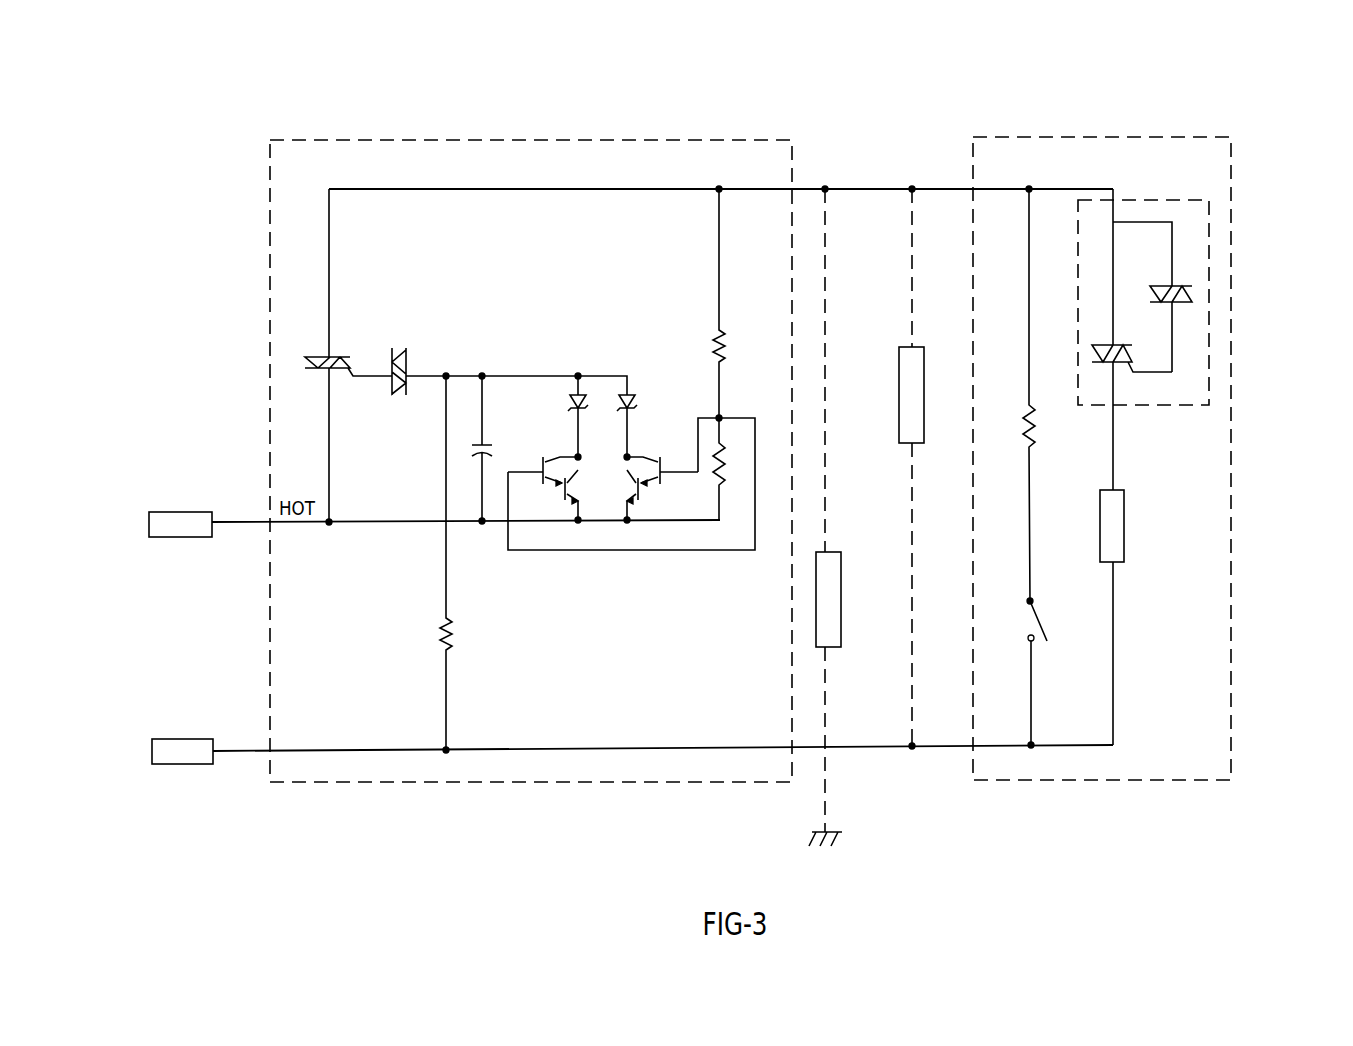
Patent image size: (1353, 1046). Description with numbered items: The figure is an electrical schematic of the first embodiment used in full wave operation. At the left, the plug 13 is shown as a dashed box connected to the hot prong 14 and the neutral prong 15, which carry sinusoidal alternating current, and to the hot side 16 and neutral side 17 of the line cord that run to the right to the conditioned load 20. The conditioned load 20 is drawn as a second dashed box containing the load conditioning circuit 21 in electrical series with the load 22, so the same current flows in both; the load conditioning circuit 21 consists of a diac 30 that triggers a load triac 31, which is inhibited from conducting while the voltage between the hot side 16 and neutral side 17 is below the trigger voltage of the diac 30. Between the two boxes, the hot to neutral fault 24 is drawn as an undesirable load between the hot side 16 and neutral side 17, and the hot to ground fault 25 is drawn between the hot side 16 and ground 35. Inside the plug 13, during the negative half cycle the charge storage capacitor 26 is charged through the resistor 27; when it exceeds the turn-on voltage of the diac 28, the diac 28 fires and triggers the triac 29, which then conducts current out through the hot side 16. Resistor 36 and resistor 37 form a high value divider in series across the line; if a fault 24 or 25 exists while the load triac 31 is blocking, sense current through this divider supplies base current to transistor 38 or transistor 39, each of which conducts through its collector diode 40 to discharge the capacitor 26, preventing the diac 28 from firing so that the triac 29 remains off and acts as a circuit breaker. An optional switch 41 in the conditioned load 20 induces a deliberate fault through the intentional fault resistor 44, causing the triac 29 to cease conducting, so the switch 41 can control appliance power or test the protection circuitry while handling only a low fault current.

The plug 13 is at (598, 140).
The hot prong 14 is at (198, 512).
The neutral prong 15 is at (198, 739).
The hot side of the line cord 16 is at (878, 189).
The neutral side of the line cord 17 is at (865, 746).
The conditioned load 20 is at (1030, 137).
The load conditioning circuit 21 is at (1210, 200).
The load 22 is at (1125, 496).
The hot to neutral fault 24 is at (922, 347).
The hot to ground fault 25 is at (841, 552).
The charge storage capacitor 26 is at (486, 446).
The resistor 27 is at (455, 628).
The diac 28 is at (408, 357).
The triac 29 is at (343, 358).
The diac 30 is at (1176, 290).
The load triac 31 is at (1112, 350).
The ground 35 is at (840, 832).
The resistor 36 is at (717, 340).
The resistor 37 is at (723, 476).
The transistor 38 is at (543, 487).
The transistor 39 is at (661, 482).
The collector diode 40 is at (575, 394).
The switch 41 is at (1041, 620).
The intentional fault resistor 44 is at (1034, 416).